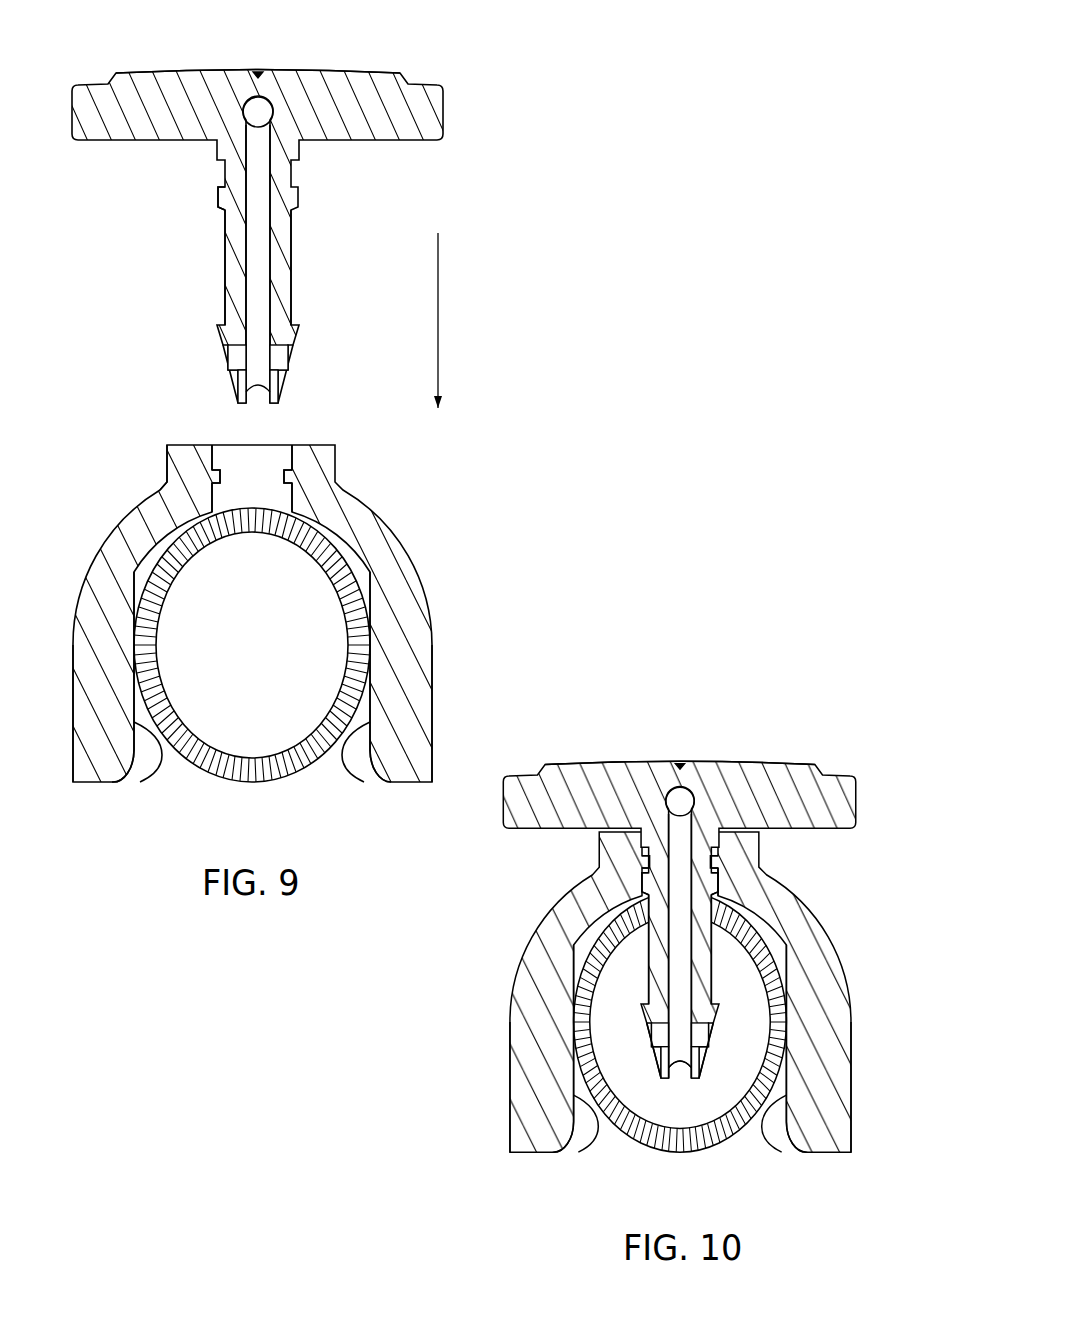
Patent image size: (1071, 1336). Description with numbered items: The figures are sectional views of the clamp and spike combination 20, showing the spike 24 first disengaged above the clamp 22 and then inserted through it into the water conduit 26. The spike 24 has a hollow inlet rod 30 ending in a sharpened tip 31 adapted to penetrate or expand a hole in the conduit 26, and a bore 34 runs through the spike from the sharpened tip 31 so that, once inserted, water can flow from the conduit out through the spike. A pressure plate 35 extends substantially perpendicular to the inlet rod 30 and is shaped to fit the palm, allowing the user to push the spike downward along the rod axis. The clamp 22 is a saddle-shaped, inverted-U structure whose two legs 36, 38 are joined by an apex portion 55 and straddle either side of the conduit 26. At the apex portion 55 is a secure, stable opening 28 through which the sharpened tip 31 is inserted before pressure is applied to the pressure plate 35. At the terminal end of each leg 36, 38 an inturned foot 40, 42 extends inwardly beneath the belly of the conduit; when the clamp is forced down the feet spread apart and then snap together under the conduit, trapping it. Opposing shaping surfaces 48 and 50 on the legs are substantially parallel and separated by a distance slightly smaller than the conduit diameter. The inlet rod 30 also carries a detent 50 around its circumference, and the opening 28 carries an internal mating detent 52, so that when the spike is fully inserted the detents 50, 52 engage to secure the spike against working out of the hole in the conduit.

In FIG. 9, the clamp and spike combination 20 is at (300, 205).
In FIG. 9, the clamp 22 is at (253, 628).
In FIG. 10, the clamp 22 is at (679, 1020).
In FIG. 9, the spike 24 is at (296, 208).
In FIG. 10, the spike 24 is at (679, 897).
In FIG. 9, the water conduit 26 is at (250, 762).
In FIG. 10, the water conduit 26 is at (680, 1049).
In FIG. 9, the opening 28 is at (284, 452).
In FIG. 9, the hollow inlet rod 30 is at (292, 258).
In FIG. 10, the hollow inlet rod 30 is at (705, 949).
In FIG. 9, the sharpened tip 31 is at (280, 388).
In FIG. 10, the sharpened tip 31 is at (700, 1051).
In FIG. 9, the bore 34 is at (256, 104).
In FIG. 10, the bore 34 is at (646, 896).
In FIG. 9, the pressure plate 35 is at (357, 72).
In FIG. 10, the pressure plate 35 is at (680, 734).
In FIG. 9, the leg 36 is at (432, 688).
In FIG. 10, the leg 36 is at (881, 1087).
In FIG. 9, the leg 38 is at (73, 662).
In FIG. 10, the leg 38 is at (478, 1083).
In FIG. 9, the inturned foot 40 is at (362, 768).
In FIG. 10, the inturned foot 40 is at (785, 1152).
In FIG. 9, the inturned foot 42 is at (140, 768).
In FIG. 10, the inturned foot 42 is at (576, 1152).
In FIG. 9, the shaping surface 48 is at (370, 578).
In FIG. 10, the shaping surface 48 is at (833, 1028).
In FIG. 9, the detent 50 is at (219, 197).
In FIG. 10, the detent 50 is at (659, 995).
In FIG. 9, the internal mating detent 52 is at (293, 478).
In FIG. 10, the internal mating detent 52 is at (711, 804).
In FIG. 9, the apex portion 55 is at (157, 512).